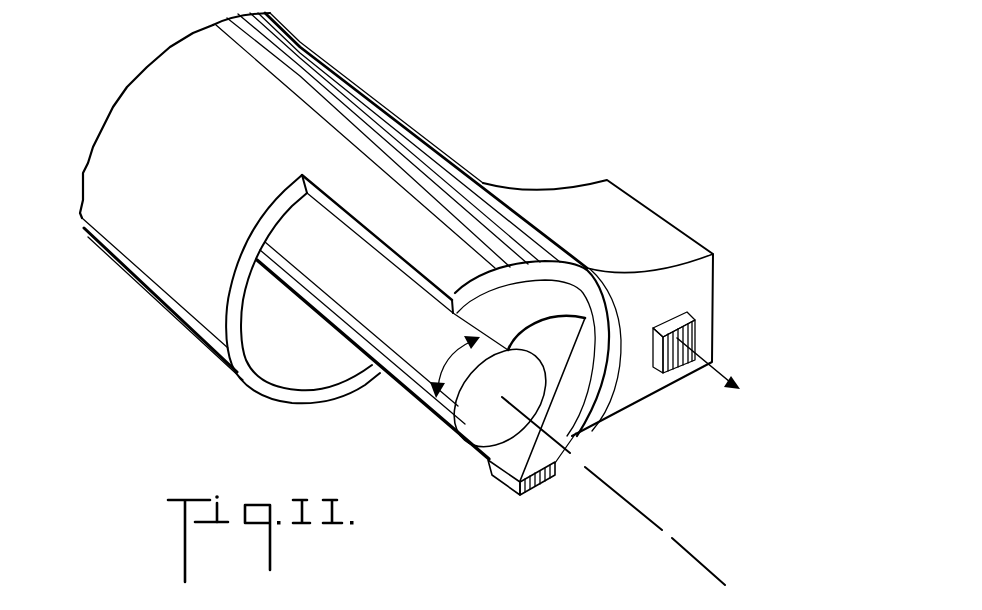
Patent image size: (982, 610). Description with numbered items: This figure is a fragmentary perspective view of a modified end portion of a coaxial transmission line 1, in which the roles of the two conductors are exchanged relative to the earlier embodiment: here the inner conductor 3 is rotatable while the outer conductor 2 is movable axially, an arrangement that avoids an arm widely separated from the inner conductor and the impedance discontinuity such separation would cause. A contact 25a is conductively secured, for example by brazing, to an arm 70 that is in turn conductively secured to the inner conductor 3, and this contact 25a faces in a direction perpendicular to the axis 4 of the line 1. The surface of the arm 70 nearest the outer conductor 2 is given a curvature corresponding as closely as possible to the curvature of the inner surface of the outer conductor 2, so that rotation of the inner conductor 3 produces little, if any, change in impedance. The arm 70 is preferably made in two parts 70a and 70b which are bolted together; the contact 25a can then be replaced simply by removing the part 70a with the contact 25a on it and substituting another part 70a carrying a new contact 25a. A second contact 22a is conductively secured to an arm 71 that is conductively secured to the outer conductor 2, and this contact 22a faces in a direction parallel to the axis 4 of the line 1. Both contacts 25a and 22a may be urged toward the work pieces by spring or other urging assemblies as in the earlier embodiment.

The line 1 is at (142, 123).
The outer conductor 2 is at (333, 83).
The inner conductor 3 is at (419, 384).
The longitudinal axis 4 is at (670, 530).
The arm 70 is at (574, 444).
The part of the arm 70a is at (598, 400).
The part of the arm 70b is at (533, 335).
The arm 71 is at (663, 243).
The contact 22a is at (695, 328).
The contact 25a is at (527, 490).